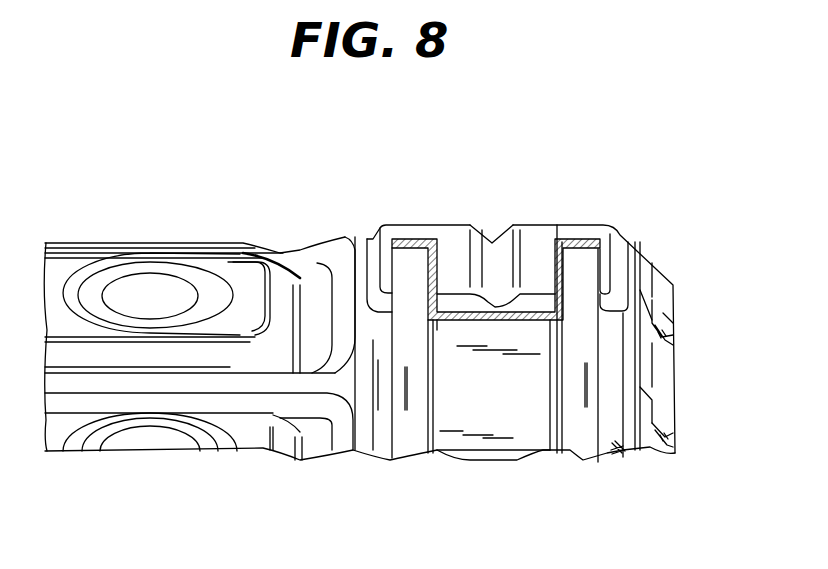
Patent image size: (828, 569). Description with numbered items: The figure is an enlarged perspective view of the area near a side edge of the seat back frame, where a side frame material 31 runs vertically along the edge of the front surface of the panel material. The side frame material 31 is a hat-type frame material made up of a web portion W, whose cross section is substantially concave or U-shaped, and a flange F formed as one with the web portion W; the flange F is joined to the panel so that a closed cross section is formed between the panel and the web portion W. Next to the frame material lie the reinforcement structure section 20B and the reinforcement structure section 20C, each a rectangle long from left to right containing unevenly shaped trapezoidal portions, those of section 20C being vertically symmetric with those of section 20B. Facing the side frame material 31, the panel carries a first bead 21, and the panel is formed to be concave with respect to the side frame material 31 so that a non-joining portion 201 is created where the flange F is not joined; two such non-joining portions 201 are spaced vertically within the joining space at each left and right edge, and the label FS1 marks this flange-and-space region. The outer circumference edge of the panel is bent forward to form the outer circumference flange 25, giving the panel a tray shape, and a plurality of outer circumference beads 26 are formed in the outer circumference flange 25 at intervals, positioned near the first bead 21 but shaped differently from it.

The reinforcement structure section 20B is at (242, 267).
The reinforcement structure section 20C is at (356, 312).
The first bead 21 is at (492, 245).
The non-joining portion 201 is at (550, 235).
The side frame material 31 is at (492, 448).
The flange F is at (409, 448).
The web portion W is at (457, 447).
The flange FS1 is at (583, 448).
The outer circumference flange 25 is at (677, 378).
The outer circumference bead 26 is at (665, 341).